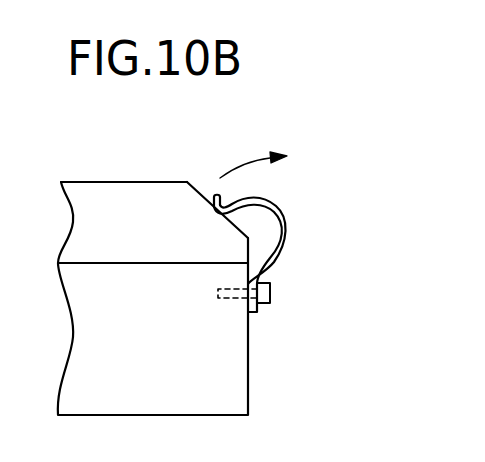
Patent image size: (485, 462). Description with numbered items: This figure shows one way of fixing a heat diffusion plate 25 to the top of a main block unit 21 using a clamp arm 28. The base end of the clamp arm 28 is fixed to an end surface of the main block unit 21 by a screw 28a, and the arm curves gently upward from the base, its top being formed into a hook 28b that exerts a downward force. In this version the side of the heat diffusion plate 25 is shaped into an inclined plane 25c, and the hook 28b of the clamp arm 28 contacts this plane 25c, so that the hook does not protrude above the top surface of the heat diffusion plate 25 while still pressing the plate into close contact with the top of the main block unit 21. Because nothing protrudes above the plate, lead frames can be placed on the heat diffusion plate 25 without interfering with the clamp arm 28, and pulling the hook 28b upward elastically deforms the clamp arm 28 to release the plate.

The main block unit 21 is at (230, 370).
The heat diffusion plate 25 is at (120, 200).
The inclined plane 25c is at (238, 229).
The clamp arm 28 is at (280, 237).
The screw 28a is at (270, 295).
The hook 28b is at (223, 198).